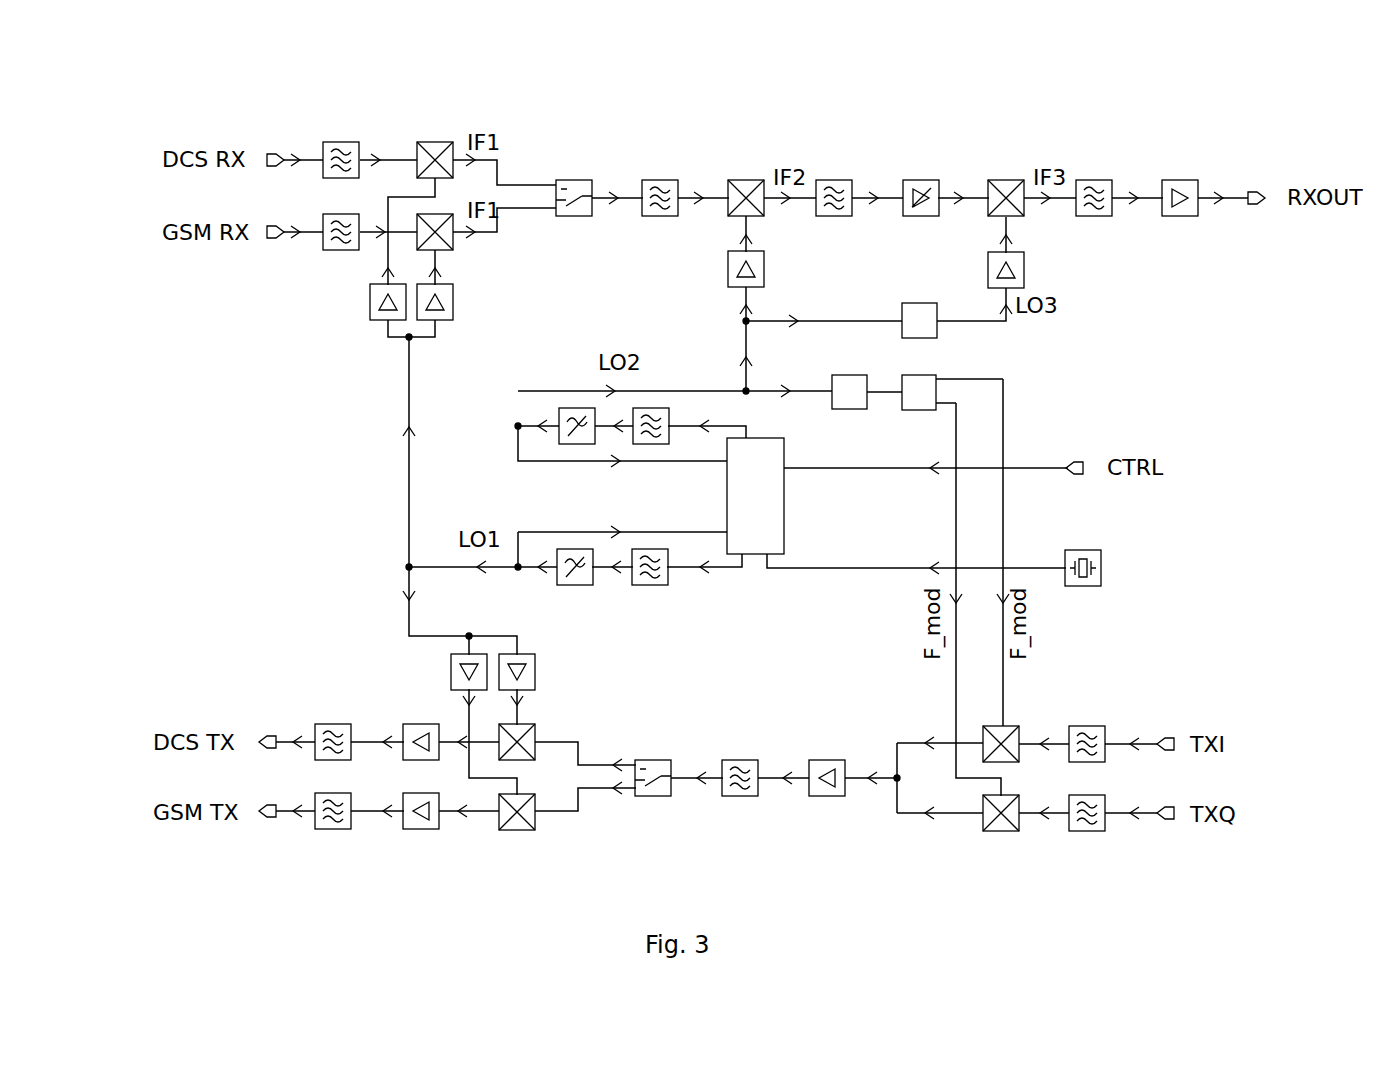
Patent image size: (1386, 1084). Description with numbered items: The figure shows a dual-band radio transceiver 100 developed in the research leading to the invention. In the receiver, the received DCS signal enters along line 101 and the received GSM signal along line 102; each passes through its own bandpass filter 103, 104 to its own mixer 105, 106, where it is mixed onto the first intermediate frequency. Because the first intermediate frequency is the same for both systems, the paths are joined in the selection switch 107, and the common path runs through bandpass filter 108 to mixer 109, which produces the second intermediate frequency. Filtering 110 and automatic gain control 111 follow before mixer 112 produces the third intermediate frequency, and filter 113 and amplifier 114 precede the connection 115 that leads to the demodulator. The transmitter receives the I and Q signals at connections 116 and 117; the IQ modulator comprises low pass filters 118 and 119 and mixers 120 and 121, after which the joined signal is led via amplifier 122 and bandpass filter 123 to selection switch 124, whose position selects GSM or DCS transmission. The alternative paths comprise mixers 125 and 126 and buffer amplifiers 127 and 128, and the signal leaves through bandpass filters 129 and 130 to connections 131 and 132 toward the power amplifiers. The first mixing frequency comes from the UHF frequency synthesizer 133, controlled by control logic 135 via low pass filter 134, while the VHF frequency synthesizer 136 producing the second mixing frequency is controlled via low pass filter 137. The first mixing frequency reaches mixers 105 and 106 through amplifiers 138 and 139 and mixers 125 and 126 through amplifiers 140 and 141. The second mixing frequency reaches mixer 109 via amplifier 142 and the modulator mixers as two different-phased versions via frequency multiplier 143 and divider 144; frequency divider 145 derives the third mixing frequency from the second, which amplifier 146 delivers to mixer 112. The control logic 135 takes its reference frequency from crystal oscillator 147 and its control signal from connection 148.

The radio transceiver 100 is at (268, 507).
The line 101 is at (267, 153).
The line 102 is at (270, 238).
The bandpass filter 103 is at (342, 143).
The bandpass filter 104 is at (340, 250).
The mixer 105 is at (432, 143).
The mixer 106 is at (453, 243).
The selection switch 107 is at (574, 180).
The bandpass filter 108 is at (660, 180).
The mixer 109 is at (748, 180).
The filtering 110 is at (834, 180).
The automatic gain control 111 is at (921, 180).
The mixer 112 is at (1006, 181).
The filter 113 is at (1094, 181).
The amplifier 114 is at (1180, 181).
The connection 115 is at (1262, 192).
The I connection 116 is at (1166, 738).
The Q connection 117 is at (1166, 820).
The low pass filter 118 is at (1087, 726).
The low pass filter 119 is at (1087, 832).
The mixer 120 is at (1010, 726).
The mixer 121 is at (1001, 832).
The amplifier 122 is at (827, 796).
The bandpass filter 123 is at (740, 796).
The selection switch 124 is at (653, 796).
The mixer 125 is at (525, 725).
The mixer 126 is at (525, 830).
The buffer amplifier 127 is at (430, 724).
The buffer amplifier 128 is at (430, 829).
The bandpass filter 129 is at (350, 724).
The bandpass filter 130 is at (345, 829).
The connection 131 is at (262, 735).
The connection 132 is at (268, 820).
The UHF frequency synthesizer 133 is at (575, 585).
The low pass filter 134 is at (650, 585).
The control logic 135 is at (772, 522).
The VHF frequency synthesizer 136 is at (577, 408).
The low pass filter 137 is at (651, 408).
The amplifier 138 is at (369, 305).
The amplifier 139 is at (453, 305).
The amplifier 140 is at (533, 672).
The amplifier 141 is at (452, 672).
The amplifier 142 is at (729, 275).
The frequency multiplier 143 is at (850, 409).
The divider 144 is at (920, 410).
The frequency divider 145 is at (925, 338).
The amplifier 146 is at (1024, 275).
The crystal oscillator 147 is at (1101, 572).
The connection 148 is at (1078, 462).